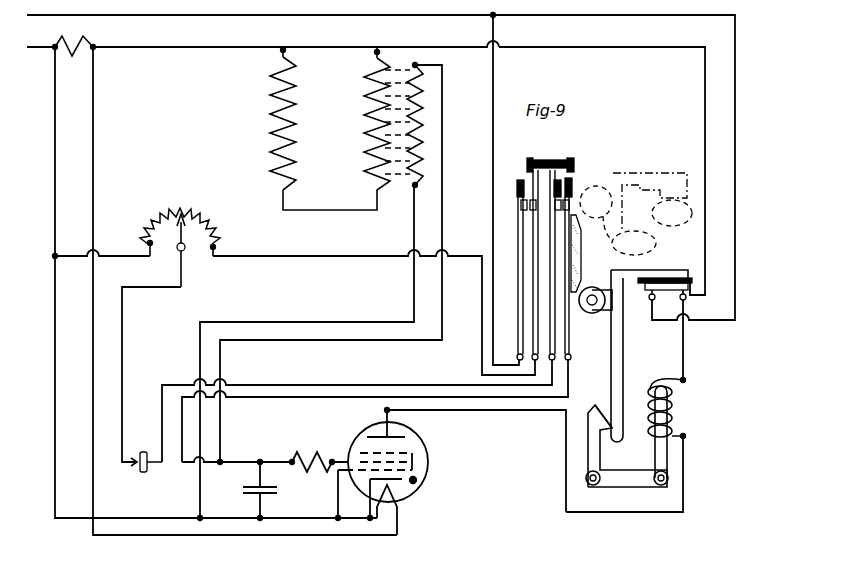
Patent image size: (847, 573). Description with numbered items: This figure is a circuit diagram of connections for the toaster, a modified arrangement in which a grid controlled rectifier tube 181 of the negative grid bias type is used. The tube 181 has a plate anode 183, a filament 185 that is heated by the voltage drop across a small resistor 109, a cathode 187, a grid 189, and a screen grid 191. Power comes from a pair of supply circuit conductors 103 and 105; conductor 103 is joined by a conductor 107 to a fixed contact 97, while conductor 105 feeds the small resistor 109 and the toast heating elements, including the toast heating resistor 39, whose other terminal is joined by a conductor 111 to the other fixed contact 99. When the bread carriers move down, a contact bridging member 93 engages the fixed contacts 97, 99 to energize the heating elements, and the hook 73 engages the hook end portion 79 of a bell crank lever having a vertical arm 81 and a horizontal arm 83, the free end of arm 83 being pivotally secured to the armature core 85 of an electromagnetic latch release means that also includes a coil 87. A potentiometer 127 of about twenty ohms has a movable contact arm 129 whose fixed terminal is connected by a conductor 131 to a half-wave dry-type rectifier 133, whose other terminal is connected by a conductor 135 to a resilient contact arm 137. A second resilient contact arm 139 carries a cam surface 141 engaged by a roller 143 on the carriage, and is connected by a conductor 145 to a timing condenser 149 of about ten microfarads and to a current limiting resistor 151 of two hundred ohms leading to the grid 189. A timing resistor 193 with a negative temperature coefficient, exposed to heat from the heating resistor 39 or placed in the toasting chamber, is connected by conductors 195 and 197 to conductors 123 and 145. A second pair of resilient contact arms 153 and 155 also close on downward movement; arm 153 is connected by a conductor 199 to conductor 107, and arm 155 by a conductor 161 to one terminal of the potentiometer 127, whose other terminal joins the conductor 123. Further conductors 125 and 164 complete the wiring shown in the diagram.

The toast heating resistor 39 is at (372, 123).
The hook 73 is at (615, 440).
The hook end portion 79 is at (595, 404).
The vertical arm 81 is at (586, 456).
The horizontal arm 83 is at (628, 488).
The armature core 85 is at (669, 462).
The coil 87 is at (672, 410).
The contact bridging member 93 is at (692, 282).
The fixed contact 97 is at (650, 302).
The fixed contact 99 is at (686, 302).
The supply circuit conductor 103 is at (260, 8).
The supply circuit conductor 105 is at (35, 48).
The conductor 107 is at (540, 17).
The small resistor 109 is at (90, 43).
The conductor 111 is at (615, 17).
The conductor 123 is at (55, 160).
The conductor 125 is at (94, 134).
The potentiometer 127 is at (184, 211).
The movable contact arm 129 is at (188, 242).
The conductor 131 is at (123, 365).
The half-wave dry-type rectifier 133 is at (137, 472).
The conductor 135 is at (285, 385).
The resilient contact arm 137 is at (528, 165).
The second resilient contact arm 139 is at (572, 165).
The cam surface 141 is at (580, 256).
The roller 143 is at (590, 314).
The conductor 145 is at (288, 398).
The timing condenser 149 is at (275, 492).
The current limiting resistor 151 is at (305, 455).
The resilient contact arm 153 is at (520, 178).
The resilient contact arm 155 is at (537, 166).
The conductor 161 is at (374, 257).
The conductor 164 is at (519, 413).
The grid controlled rectifier tube 181 is at (419, 488).
The plate anode 183 is at (398, 437).
The filament 185 is at (400, 514).
The cathode 187 is at (381, 505).
The grid 189 is at (362, 446).
The screen grid 191 is at (419, 467).
The timing resistor 193 is at (423, 160).
The conductor 195 is at (304, 321).
The conductor 197 is at (430, 341).
The conductor 199 is at (492, 197).